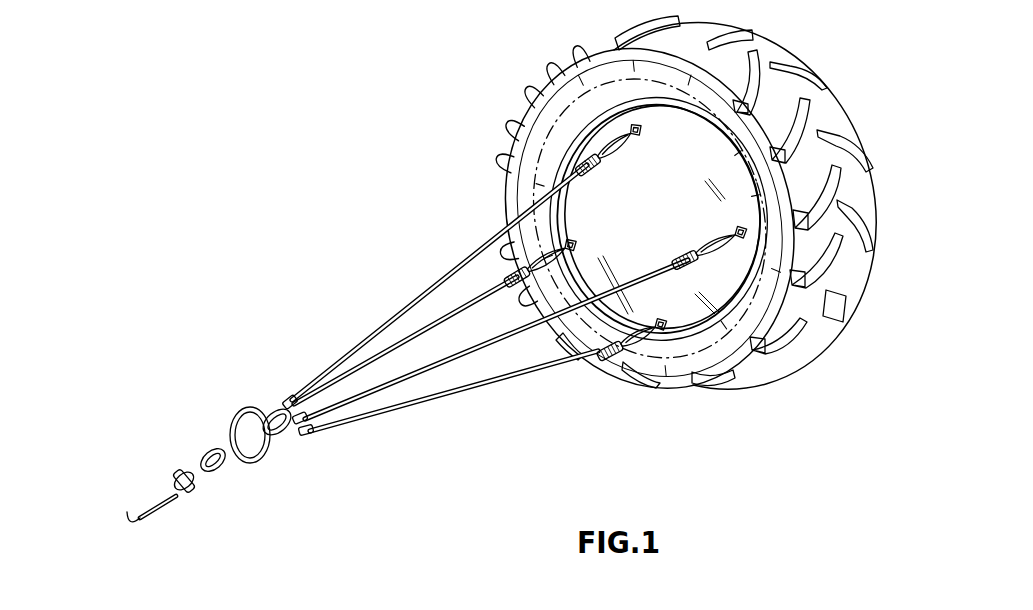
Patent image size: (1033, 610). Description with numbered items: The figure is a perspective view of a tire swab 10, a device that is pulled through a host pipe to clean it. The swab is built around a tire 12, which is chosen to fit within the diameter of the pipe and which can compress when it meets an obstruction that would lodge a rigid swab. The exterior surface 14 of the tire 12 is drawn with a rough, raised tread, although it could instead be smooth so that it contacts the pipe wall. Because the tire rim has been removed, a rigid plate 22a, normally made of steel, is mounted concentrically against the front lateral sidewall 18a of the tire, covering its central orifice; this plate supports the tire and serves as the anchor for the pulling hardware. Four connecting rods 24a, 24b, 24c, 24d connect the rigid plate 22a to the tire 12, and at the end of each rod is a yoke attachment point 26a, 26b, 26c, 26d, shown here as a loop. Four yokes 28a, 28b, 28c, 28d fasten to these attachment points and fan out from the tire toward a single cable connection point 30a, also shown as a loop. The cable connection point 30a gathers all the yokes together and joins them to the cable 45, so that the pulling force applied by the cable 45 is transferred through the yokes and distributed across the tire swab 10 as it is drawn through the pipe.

The tire swab 10 is at (398, 310).
The tire 12 is at (845, 100).
The exterior surface 14 is at (647, 50).
The front lateral sidewall 18a is at (703, 343).
The rigid plate 22a is at (681, 232).
The connecting rod 24a is at (672, 327).
The connecting rod 24b is at (747, 240).
The connecting rod 24c is at (642, 133).
The connecting rod 24d is at (583, 243).
The yoke attachment point 26a is at (662, 323).
The yoke attachment point 26b is at (737, 228).
The yoke attachment point 26c is at (643, 135).
The yoke attachment point 26d is at (575, 238).
The yoke 28a is at (363, 417).
The yoke 28b is at (513, 328).
The yoke 28c is at (347, 350).
The yoke 28d is at (473, 300).
The cable connection point 30a is at (250, 465).
The cable 45 is at (142, 500).